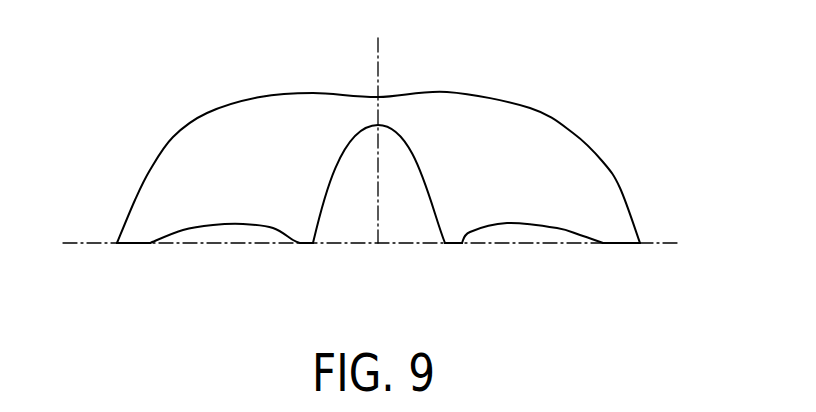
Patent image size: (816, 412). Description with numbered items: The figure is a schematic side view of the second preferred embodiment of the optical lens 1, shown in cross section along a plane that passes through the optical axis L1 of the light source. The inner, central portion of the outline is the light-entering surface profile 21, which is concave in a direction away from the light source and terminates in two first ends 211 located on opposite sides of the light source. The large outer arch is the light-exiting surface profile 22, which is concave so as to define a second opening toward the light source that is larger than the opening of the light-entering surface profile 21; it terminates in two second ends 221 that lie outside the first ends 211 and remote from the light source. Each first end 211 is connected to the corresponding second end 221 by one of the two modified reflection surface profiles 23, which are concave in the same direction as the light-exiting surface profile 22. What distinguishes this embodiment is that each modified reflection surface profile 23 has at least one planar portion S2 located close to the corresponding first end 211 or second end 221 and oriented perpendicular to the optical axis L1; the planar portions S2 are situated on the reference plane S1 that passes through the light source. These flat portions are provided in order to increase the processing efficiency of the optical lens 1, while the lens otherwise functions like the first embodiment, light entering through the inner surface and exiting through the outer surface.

The optical lens 1 is at (553, 102).
The light-entering surface profile 21 is at (432, 195).
The first ends 211 is at (310, 242).
The light-exiting surface profile 22 is at (637, 218).
The second ends 221 is at (117, 243).
The modified reflection surface profiles 23 is at (558, 228).
The reference plane S1 is at (78, 243).
The planar portion S2 is at (135, 243).
The optical axis L1 is at (380, 57).